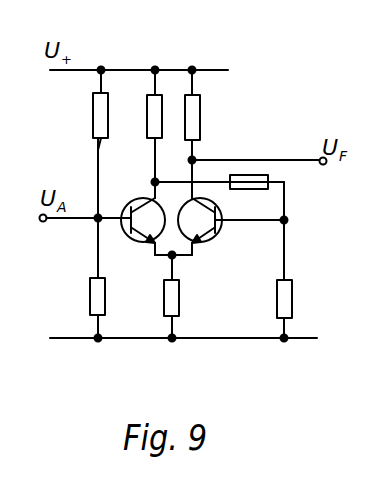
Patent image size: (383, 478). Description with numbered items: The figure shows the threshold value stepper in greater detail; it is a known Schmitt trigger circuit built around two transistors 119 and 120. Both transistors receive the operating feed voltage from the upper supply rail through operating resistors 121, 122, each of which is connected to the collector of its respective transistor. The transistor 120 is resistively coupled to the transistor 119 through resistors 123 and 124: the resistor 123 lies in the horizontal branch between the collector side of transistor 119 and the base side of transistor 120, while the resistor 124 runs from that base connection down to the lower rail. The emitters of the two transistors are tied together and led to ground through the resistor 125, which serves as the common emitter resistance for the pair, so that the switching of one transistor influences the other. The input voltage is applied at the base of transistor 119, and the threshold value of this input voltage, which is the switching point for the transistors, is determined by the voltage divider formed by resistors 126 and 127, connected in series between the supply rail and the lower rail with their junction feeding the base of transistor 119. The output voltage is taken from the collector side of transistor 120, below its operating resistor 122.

The transistor 119 is at (139, 198).
The transistor 120 is at (213, 242).
The operating resistor 121 is at (149, 121).
The operating resistor 122 is at (201, 119).
The resistor 123 is at (255, 186).
The resistor 124 is at (276, 293).
The common emitter resistance 125 is at (163, 301).
The voltage divider resistor 126 is at (93, 112).
The voltage divider resistor 127 is at (88, 295).